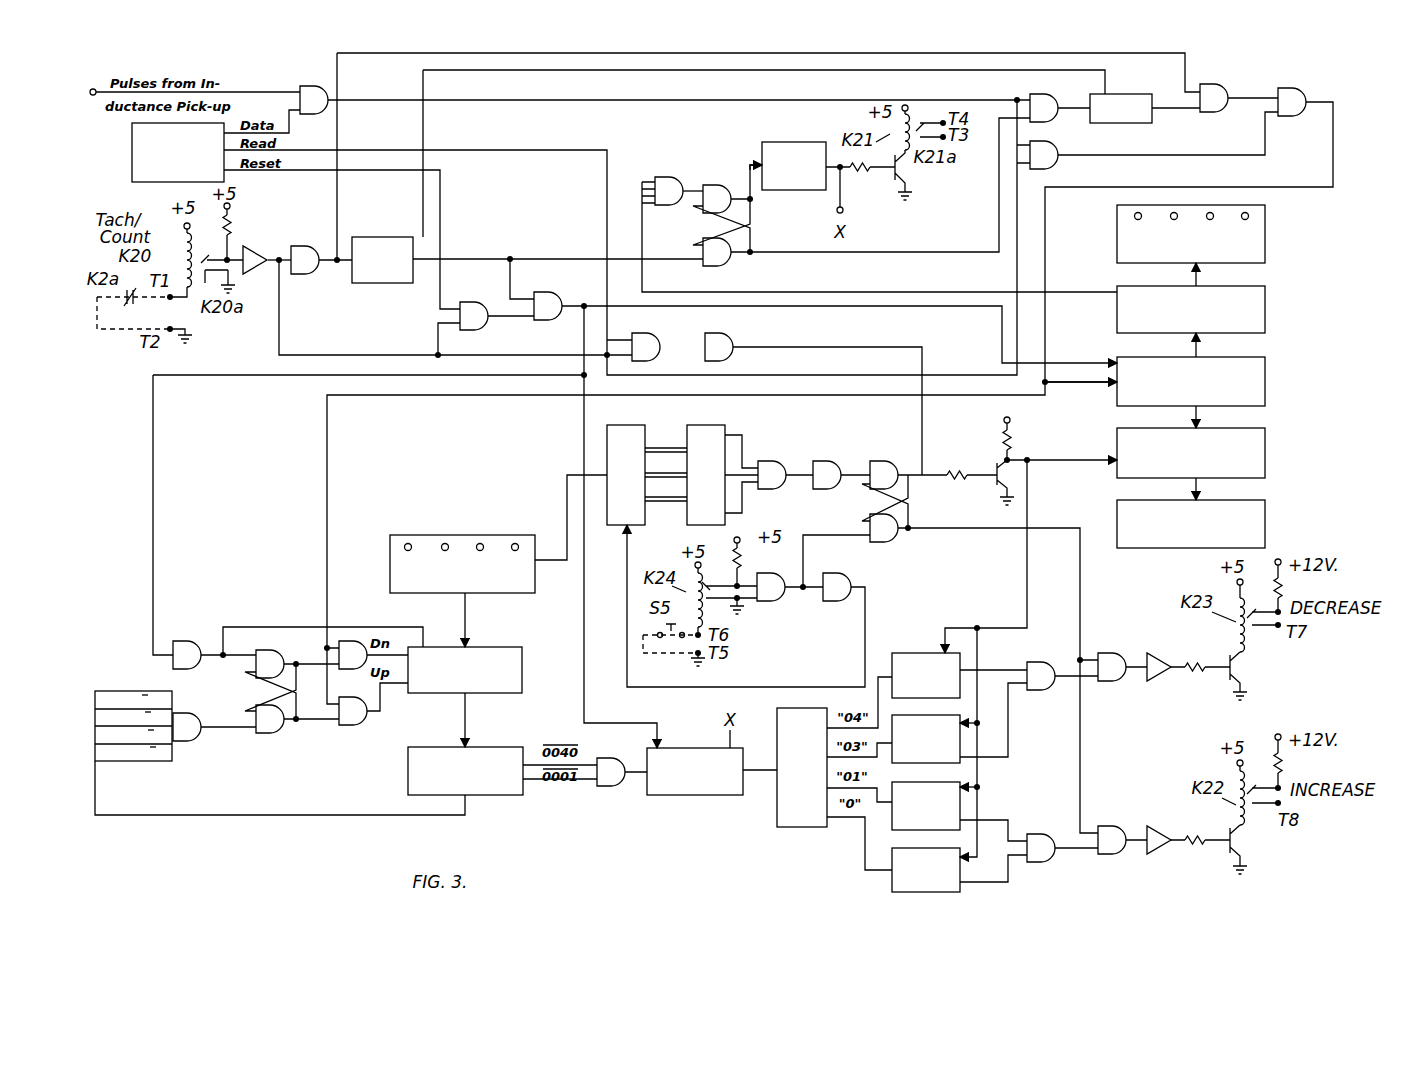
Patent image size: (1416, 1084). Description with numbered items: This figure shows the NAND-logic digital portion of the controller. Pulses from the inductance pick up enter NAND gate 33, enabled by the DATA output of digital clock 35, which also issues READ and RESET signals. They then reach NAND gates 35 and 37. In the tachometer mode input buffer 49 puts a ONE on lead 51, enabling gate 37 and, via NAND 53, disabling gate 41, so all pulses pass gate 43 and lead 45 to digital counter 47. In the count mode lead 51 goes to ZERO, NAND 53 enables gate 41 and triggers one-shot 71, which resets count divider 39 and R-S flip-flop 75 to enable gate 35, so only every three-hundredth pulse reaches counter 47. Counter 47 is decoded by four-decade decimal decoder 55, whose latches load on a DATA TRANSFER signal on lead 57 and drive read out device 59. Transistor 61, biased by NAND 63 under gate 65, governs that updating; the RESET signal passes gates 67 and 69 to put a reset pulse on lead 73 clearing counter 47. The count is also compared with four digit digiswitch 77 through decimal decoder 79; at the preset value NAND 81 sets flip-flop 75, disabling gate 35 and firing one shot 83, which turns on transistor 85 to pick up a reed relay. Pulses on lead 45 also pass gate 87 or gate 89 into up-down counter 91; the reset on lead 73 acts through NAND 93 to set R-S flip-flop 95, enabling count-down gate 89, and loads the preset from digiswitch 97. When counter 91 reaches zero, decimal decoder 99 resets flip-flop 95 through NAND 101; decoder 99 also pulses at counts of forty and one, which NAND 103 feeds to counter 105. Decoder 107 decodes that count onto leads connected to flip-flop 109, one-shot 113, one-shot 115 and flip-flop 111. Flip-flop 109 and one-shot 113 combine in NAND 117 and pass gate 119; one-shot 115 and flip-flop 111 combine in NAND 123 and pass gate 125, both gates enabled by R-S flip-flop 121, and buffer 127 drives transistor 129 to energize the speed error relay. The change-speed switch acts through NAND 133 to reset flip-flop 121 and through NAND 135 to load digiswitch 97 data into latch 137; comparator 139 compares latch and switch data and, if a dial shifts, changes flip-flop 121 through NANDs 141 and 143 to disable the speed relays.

The NAND gate 33 is at (306, 86).
The digital clock 35 is at (132, 158).
The NAND gate 37 is at (1060, 162).
The count divider 39 is at (1132, 94).
The gate 41 is at (1220, 86).
The gate 43 is at (1305, 90).
The lead 45 is at (1340, 136).
The digital counter 47 is at (1265, 382).
The input buffer 49 is at (256, 251).
The lead 51 is at (342, 355).
The NAND gate 53 is at (306, 246).
The four-decade decimal decoder 55 is at (1265, 450).
The lead 57 is at (1066, 462).
The read out device 59 is at (1265, 508).
The transistor 61 is at (1003, 487).
The NAND gate 63 is at (736, 341).
The gate 65 is at (661, 341).
The gate 67 is at (471, 302).
The gate 69 is at (552, 292).
The one-shot multivibrator 71 is at (396, 237).
The lead 73 is at (812, 307).
The R-S flip-flop 75 is at (675, 241).
The four digit digiswitch 77 is at (1265, 236).
The decimal decoder 79 is at (1265, 308).
The NAND gate 81 is at (672, 177).
The one shot multivibrator 83 is at (790, 142).
The transistor 85 is at (893, 179).
The gate 87 is at (350, 725).
The count down gate 89 is at (353, 641).
The up-down counter 91 is at (486, 647).
The NAND gate 93 is at (188, 641).
The R-S flip-flop 95 is at (231, 700).
The four decade digiswitch 97 is at (488, 535).
The decimal decoder 99 is at (495, 747).
The NAND gate 101 is at (200, 742).
The NAND gate 103 is at (615, 786).
The counter 105 is at (672, 795).
The decoder 107 is at (802, 827).
The flip-flop 109 is at (892, 889).
The flip-flop 111 is at (900, 653).
The one-shot multivibrator 113 is at (960, 806).
The one-shot multivibrator 115 is at (960, 741).
The NAND gate 117 is at (1040, 862).
The gate 119 is at (1102, 854).
The R-S flip-flop 121 is at (815, 520).
The NAND gate 123 is at (1050, 662).
The gate 125 is at (1112, 653).
The buffer 127 is at (1156, 826).
The transistor 129 is at (1165, 653).
The NAND gate 133 is at (771, 601).
The NAND gate 135 is at (834, 601).
The latch 137 is at (653, 425).
The comparator 139 is at (733, 425).
The NAND gate 141 is at (773, 461).
The NAND gate 143 is at (823, 461).